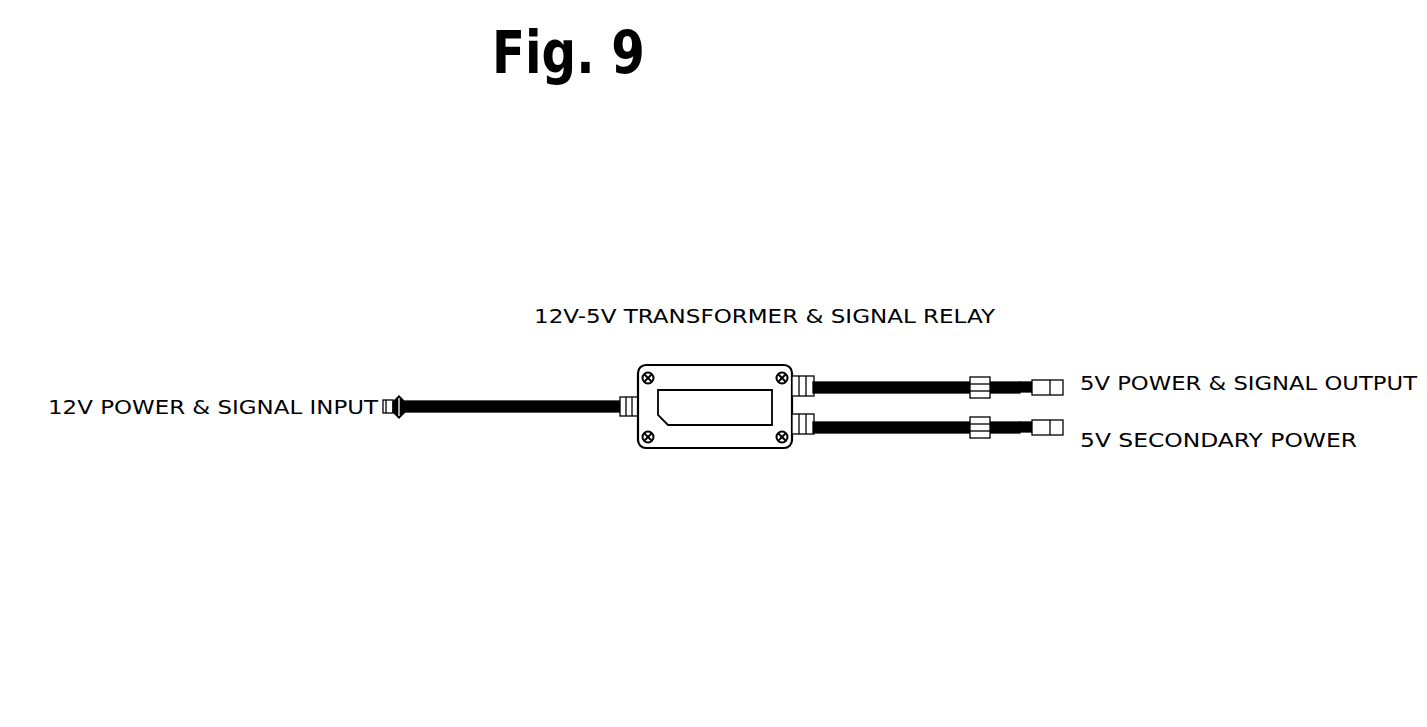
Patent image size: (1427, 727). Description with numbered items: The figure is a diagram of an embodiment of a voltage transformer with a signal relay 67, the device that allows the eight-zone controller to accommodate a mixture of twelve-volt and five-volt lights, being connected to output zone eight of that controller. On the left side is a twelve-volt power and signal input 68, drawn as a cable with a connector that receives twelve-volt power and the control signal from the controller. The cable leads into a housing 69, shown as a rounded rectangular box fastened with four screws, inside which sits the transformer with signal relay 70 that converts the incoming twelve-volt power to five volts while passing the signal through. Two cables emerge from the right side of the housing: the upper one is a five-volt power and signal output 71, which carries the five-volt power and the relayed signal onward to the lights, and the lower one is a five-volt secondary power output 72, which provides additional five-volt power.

The voltage transformer with a signal relay 67 is at (407, 333).
The twelve-volt power and signal input 68 is at (448, 420).
The housing 69 is at (715, 408).
The transformer with signal relay 70 is at (726, 503).
The five-volt power and signal output 71 is at (1020, 382).
The five-volt secondary power output 72 is at (1015, 443).